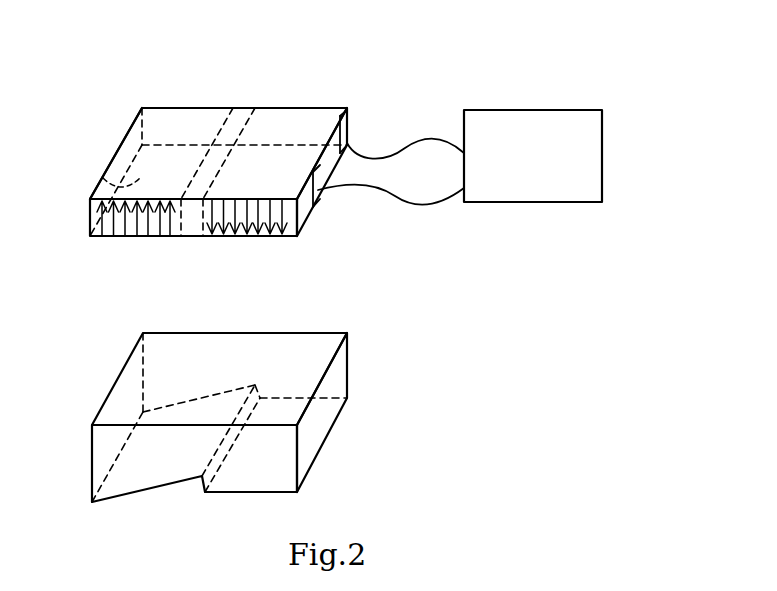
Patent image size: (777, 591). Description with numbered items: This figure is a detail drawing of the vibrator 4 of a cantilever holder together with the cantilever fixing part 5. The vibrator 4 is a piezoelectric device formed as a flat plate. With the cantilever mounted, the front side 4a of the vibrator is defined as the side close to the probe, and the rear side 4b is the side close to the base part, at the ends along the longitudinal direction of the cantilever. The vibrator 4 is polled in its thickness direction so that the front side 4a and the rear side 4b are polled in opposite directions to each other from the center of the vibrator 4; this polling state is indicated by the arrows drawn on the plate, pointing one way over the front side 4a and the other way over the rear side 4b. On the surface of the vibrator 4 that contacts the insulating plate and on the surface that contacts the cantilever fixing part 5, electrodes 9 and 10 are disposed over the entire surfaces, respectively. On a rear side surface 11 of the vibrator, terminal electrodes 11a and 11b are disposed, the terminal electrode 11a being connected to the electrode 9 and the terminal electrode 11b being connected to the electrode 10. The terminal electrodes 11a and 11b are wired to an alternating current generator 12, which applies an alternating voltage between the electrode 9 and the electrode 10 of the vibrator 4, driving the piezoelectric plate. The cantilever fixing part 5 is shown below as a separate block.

The vibrator 4 is at (283, 78).
The front side of the vibrator 4a is at (127, 242).
The rear side of the vibrator 4b is at (248, 242).
The electrode 9 is at (122, 148).
The electrode 10 is at (98, 181).
The rear side surface 11 is at (330, 181).
The terminal electrode 11a is at (350, 130).
The terminal electrode 11b is at (307, 212).
The alternating current generator 12 is at (550, 110).
The cantilever fixing part 5 is at (322, 445).